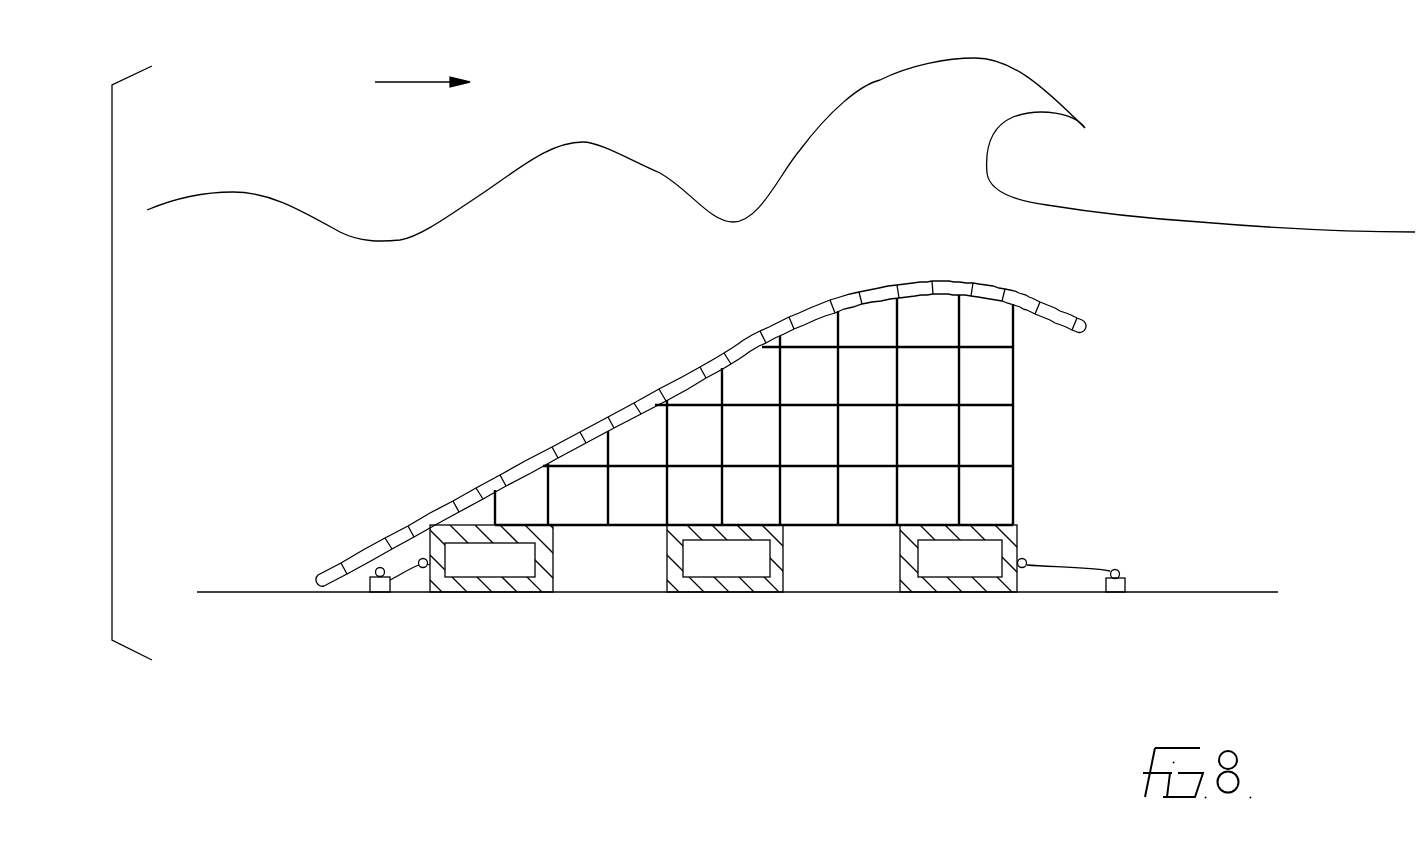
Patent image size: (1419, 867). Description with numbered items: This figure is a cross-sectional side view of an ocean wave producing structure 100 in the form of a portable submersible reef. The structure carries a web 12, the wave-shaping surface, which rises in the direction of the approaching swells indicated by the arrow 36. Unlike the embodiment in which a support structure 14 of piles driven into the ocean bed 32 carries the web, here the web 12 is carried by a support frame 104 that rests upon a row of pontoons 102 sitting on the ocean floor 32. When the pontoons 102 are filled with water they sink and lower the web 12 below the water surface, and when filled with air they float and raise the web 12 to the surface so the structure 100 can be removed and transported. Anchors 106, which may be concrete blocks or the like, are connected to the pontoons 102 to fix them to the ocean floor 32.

The web 12 is at (508, 455).
The support structure 14 is at (1130, 482).
The ocean bed 32 is at (1292, 605).
The arrow 36 is at (422, 59).
The ocean wave producing structure 100 is at (387, 527).
The pontoons 102 is at (533, 588).
The support frame 104 is at (1028, 429).
The anchors 106 is at (380, 595).